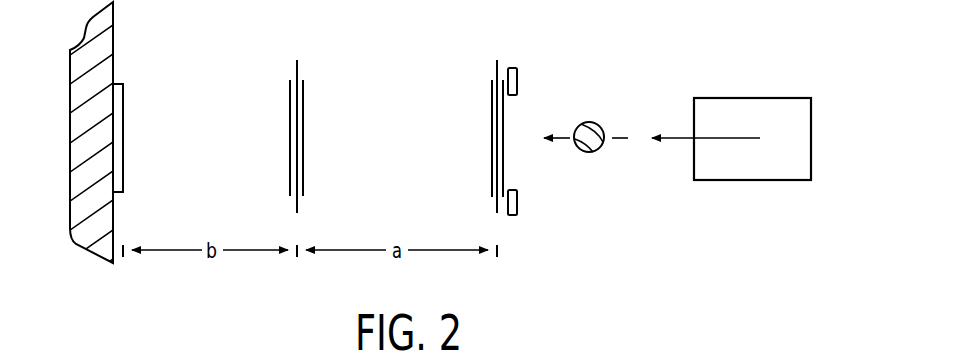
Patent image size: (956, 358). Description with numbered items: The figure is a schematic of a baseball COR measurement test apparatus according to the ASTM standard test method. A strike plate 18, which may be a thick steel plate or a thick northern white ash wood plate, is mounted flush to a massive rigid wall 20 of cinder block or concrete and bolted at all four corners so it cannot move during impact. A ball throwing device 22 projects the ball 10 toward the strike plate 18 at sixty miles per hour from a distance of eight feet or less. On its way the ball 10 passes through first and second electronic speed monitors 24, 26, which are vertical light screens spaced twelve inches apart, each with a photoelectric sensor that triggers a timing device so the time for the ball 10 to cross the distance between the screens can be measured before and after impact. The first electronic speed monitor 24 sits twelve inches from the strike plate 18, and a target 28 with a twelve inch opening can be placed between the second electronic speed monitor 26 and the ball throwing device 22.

The ball 10 is at (603, 117).
The strike plate 18 is at (123, 139).
The rigid wall 20 is at (105, 47).
The ball throwing device 22 is at (775, 98).
The first electronic speed monitor 24 is at (303, 140).
The second electronic speed monitor 26 is at (503, 122).
The target 28 is at (517, 203).